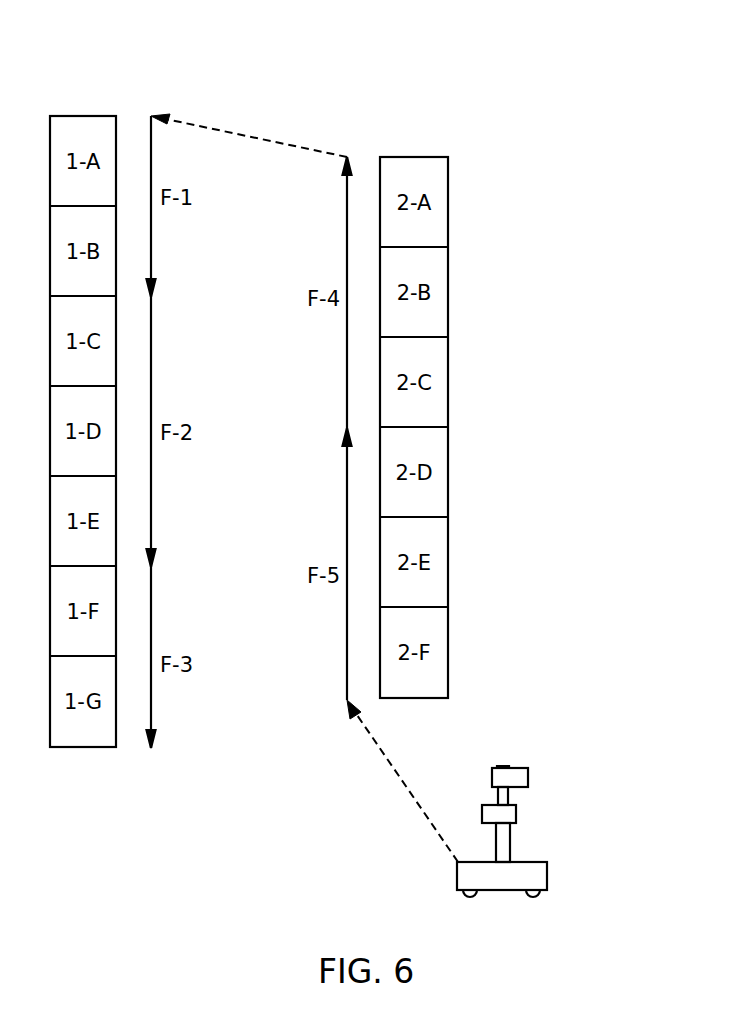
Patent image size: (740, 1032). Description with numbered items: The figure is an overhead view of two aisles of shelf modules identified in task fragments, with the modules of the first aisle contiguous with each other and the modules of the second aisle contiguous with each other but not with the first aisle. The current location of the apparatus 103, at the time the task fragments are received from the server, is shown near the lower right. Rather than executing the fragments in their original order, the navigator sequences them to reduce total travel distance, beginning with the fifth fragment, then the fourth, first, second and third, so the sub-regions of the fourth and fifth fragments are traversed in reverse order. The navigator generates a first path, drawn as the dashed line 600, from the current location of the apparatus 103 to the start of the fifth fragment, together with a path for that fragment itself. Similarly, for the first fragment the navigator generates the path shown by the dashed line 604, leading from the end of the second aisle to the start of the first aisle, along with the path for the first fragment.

The dashed line 604 is at (247, 135).
The dashed line 600 is at (402, 783).
The apparatus 103 is at (568, 848).